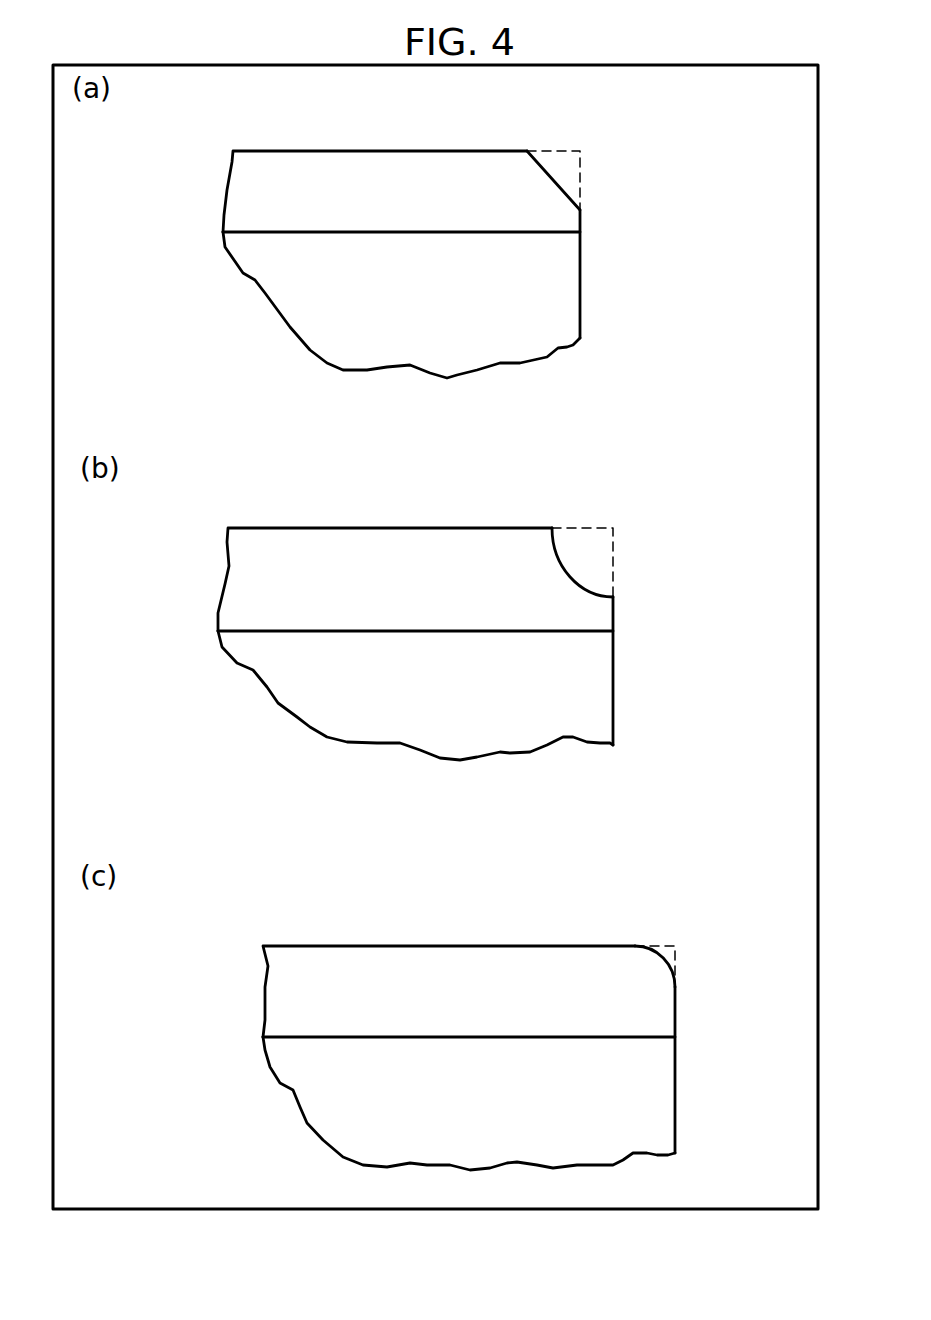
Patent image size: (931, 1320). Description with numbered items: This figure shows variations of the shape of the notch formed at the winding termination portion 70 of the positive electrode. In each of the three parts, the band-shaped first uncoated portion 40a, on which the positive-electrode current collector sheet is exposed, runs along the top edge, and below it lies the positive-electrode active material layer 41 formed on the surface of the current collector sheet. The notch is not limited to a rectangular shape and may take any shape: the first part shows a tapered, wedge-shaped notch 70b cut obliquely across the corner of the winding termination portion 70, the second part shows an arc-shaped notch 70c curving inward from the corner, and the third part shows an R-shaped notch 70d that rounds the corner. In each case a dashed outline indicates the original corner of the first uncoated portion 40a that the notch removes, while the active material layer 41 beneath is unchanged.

The first uncoated portion 40a is at (372, 175).
The positive-electrode active material layer 41 is at (555, 305).
The winding termination portion 70 is at (583, 219).
The tapered notch 70b is at (570, 185).
The arc-shaped notch 70c is at (588, 567).
The R-shaped notch 70d is at (672, 963).